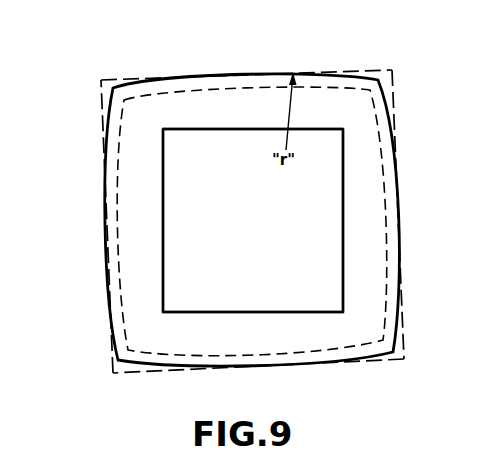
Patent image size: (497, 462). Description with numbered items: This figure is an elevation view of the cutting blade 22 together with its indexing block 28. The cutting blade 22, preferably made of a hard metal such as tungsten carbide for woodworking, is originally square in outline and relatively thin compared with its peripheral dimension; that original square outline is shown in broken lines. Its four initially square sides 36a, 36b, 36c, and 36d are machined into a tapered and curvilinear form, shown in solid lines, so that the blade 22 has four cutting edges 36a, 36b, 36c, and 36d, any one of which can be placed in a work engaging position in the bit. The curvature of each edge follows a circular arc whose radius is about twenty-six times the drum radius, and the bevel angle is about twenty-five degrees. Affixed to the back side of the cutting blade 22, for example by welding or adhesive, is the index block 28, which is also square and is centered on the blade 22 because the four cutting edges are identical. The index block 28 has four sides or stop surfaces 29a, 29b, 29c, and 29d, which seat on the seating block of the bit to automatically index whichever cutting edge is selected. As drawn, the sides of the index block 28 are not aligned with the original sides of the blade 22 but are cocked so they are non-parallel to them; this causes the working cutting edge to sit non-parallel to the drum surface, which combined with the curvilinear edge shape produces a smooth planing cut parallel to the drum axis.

The cutting blade 22 is at (247, 114).
The indexing block 28 is at (236, 234).
The stop surface 29a is at (330, 129).
The stop surface 29b is at (343, 193).
The stop surface 29c is at (257, 314).
The stop surface 29d is at (163, 212).
The cutting edge 36a is at (273, 73).
The cutting edge 36b is at (398, 207).
The cutting edge 36c is at (275, 365).
The cutting edge 36d is at (102, 202).